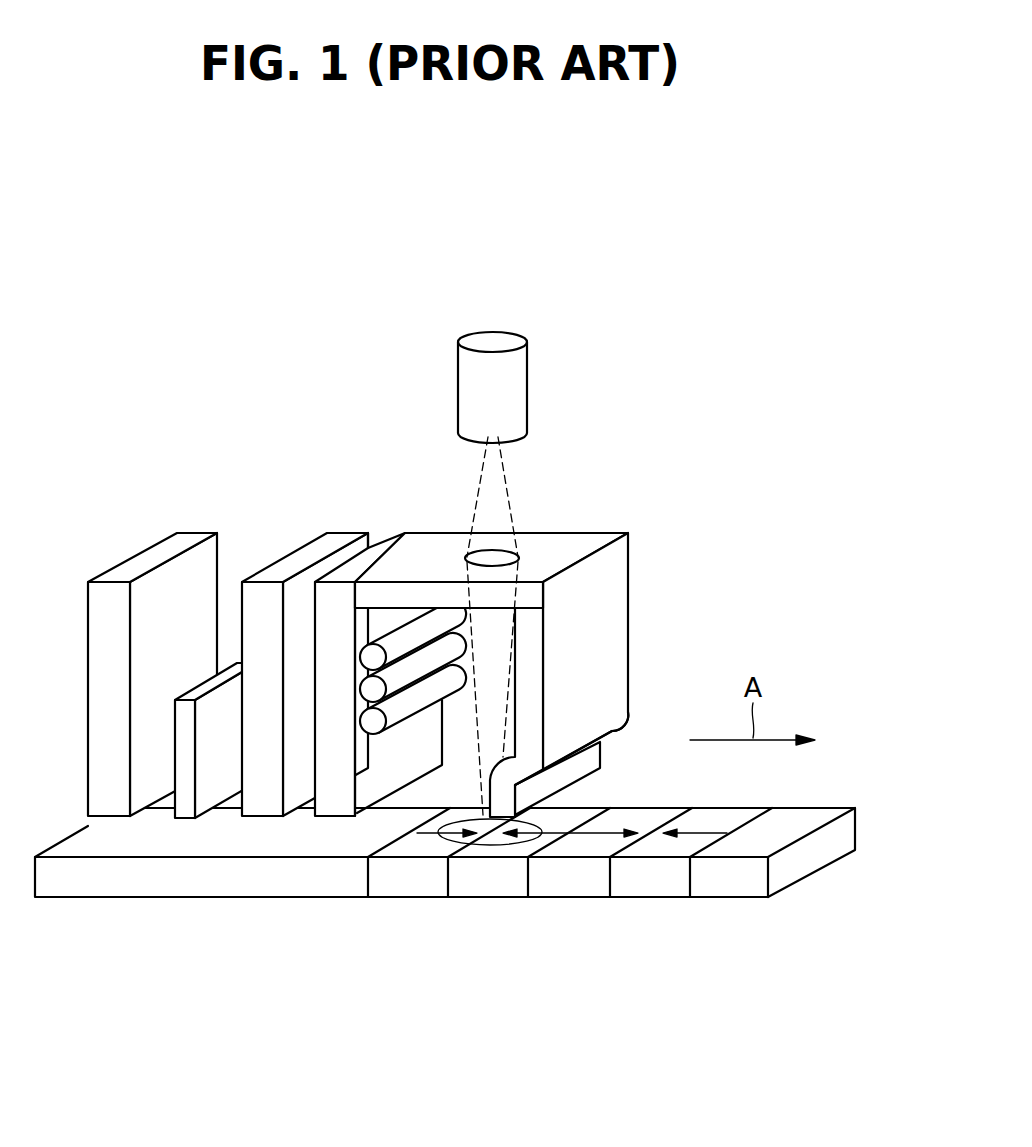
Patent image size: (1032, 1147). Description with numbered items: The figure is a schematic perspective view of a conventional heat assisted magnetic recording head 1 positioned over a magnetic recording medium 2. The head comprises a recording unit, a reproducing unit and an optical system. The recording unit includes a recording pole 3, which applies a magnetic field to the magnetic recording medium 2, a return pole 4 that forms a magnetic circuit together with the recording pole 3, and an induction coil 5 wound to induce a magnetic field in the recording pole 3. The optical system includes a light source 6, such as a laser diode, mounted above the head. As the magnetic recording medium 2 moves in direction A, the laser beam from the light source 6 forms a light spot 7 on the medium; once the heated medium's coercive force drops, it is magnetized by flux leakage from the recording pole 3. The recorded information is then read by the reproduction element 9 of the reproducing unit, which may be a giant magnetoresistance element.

The heat assisted magnetic recording head 1 is at (432, 632).
The magnetic recording medium 2 is at (813, 862).
The recording pole 3 is at (627, 638).
The return pole 4 is at (246, 744).
The induction coil 5 is at (373, 723).
The light source 6 is at (522, 393).
The light spot 7 is at (493, 845).
The reproduction element 9 is at (185, 793).